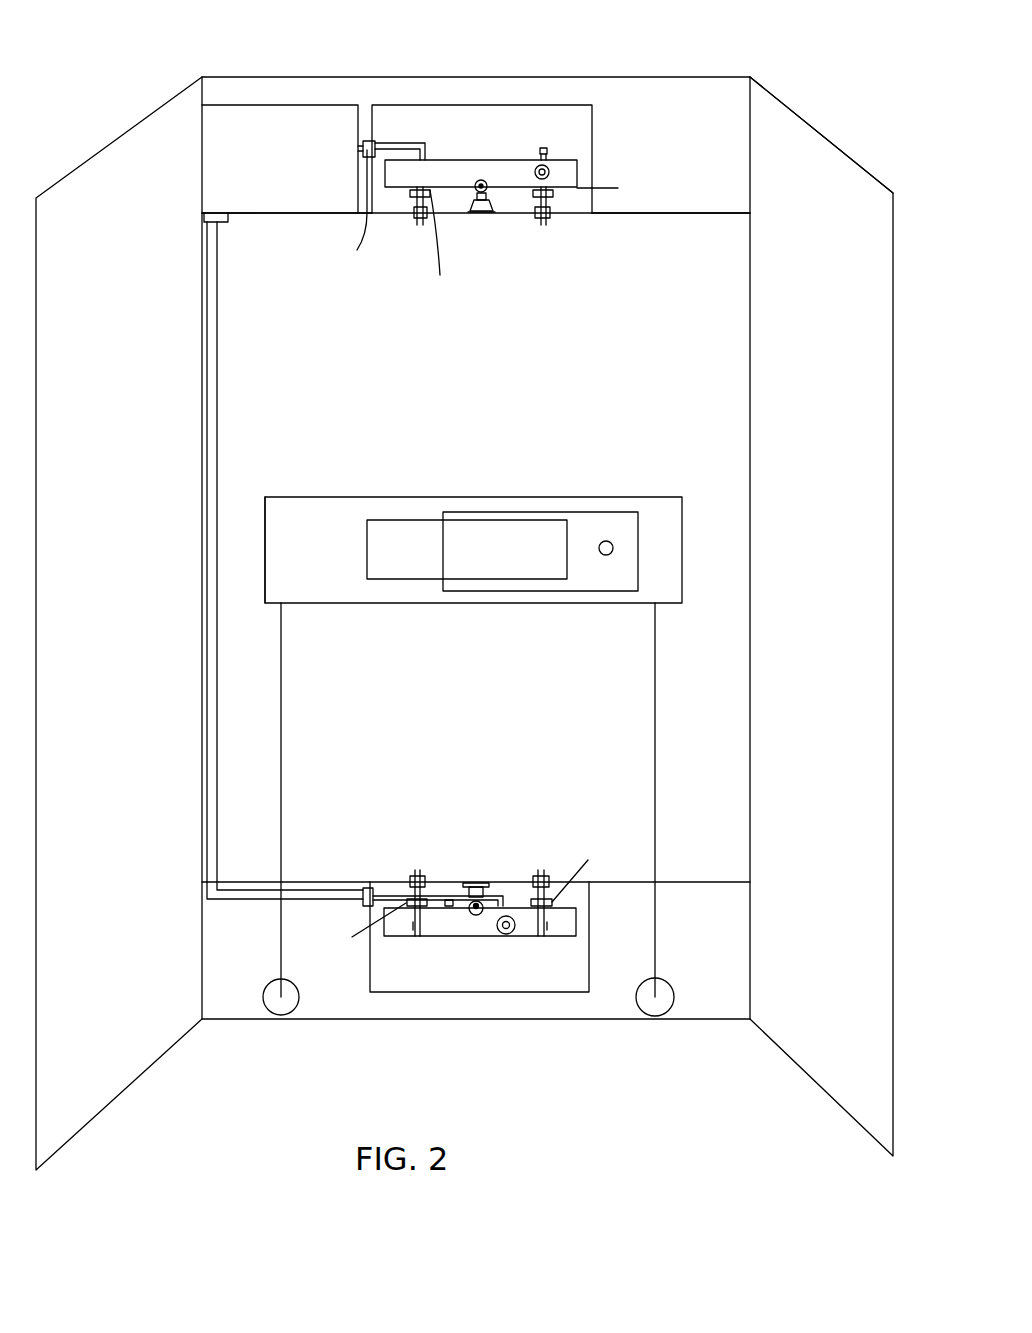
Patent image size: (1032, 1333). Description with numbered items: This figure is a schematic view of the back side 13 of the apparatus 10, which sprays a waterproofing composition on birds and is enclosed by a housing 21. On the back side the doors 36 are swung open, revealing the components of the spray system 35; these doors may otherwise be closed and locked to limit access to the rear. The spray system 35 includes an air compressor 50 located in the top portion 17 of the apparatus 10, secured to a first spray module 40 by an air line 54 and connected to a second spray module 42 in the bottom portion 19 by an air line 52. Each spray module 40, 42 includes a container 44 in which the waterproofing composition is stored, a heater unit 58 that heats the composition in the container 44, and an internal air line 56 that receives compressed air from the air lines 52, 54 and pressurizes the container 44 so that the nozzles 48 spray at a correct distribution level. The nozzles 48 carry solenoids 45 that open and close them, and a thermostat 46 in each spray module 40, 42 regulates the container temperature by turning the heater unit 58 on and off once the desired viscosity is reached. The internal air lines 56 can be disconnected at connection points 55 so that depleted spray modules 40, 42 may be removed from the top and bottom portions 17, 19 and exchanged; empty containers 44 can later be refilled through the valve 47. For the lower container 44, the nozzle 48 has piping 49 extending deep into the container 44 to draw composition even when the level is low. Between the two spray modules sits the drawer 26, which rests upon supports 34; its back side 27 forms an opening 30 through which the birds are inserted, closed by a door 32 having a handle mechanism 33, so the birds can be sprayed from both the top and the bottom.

The apparatus 10 is at (224, 1034).
The back side 13 is at (360, 90).
The top portion 17 is at (707, 130).
The bottom portion 19 is at (329, 1002).
The housing 21 is at (775, 95).
The drawer 26 is at (496, 497).
The back side of drawer 27 is at (290, 525).
The opening 30 is at (399, 565).
The door 32 is at (600, 515).
The handle mechanism 33 is at (608, 556).
The supports 34 is at (282, 770).
The spray system 35 is at (192, 190).
The doors 36 is at (113, 1068).
The first spray module 40 is at (503, 103).
The second spray module 42 is at (455, 990).
The container 44 is at (523, 157).
The solenoids 45 is at (486, 568).
The thermostat 46 is at (550, 170).
The valve 47 is at (547, 153).
The nozzles 48 is at (548, 220).
The piping 49 is at (413, 922).
The air compressor 50 is at (248, 118).
The air line 52 is at (218, 300).
The air line 54 is at (363, 215).
The connection points 55 is at (375, 143).
The internal air line 56 is at (408, 145).
The heater unit 58 is at (484, 212).